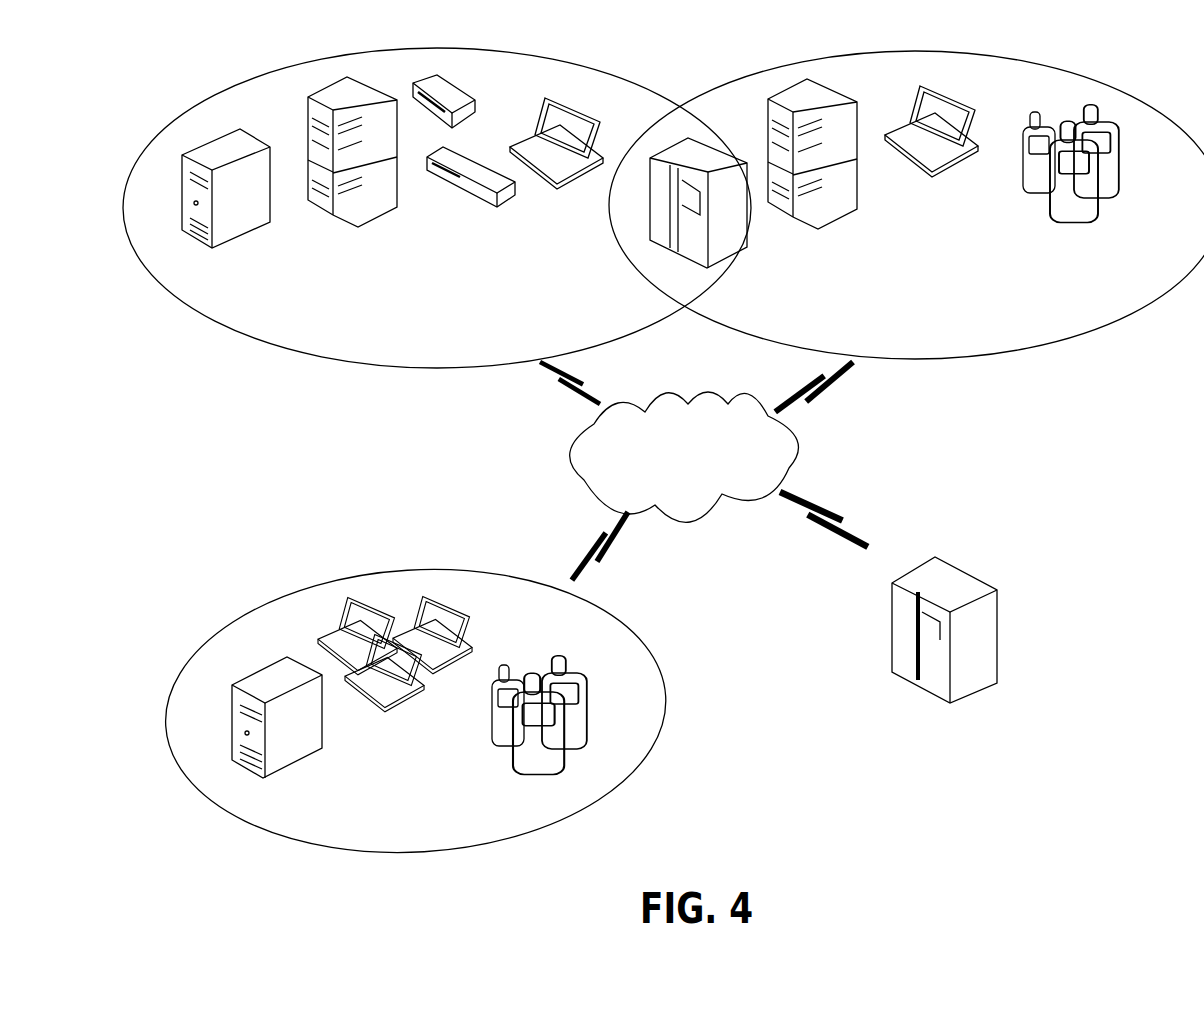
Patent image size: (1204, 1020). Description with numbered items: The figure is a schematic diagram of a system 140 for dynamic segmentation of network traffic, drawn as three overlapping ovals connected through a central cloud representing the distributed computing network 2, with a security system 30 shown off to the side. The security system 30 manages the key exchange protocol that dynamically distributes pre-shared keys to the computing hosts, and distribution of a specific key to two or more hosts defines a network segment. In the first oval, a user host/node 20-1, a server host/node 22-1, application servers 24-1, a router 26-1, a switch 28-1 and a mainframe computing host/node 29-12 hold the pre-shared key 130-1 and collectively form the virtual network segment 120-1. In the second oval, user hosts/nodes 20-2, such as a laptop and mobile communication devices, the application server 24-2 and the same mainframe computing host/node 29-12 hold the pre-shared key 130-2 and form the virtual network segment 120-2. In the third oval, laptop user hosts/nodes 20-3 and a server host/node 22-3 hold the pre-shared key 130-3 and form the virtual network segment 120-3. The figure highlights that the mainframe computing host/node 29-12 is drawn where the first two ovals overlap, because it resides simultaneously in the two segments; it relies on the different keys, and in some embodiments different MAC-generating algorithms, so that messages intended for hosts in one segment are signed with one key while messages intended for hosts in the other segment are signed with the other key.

The distributed computing network 2 is at (687, 486).
The user host/node 20-1 is at (563, 100).
The user hosts/nodes 20-2 is at (920, 95).
The user hosts/nodes 20-3 is at (351, 612).
The server 22-1 is at (217, 148).
The server host/node 22-3 is at (260, 697).
The application servers 24-1 is at (328, 106).
The application server 24-2 is at (803, 108).
The router 26-1 is at (447, 110).
The switch 28-1 is at (483, 168).
The mainframe computing host/node 29-12 is at (703, 145).
The security system 30 is at (1037, 730).
The virtual network segment 120-1 is at (558, 299).
The virtual network segment 120-2 is at (1045, 290).
The virtual network segment 120-3 is at (445, 798).
The pre-shared key 130-1 is at (550, 338).
The pre-shared key 130-2 is at (1037, 335).
The pre-shared key 130-3 is at (520, 826).
The system for dynamic segmentation of network traffic 140 is at (657, 50).